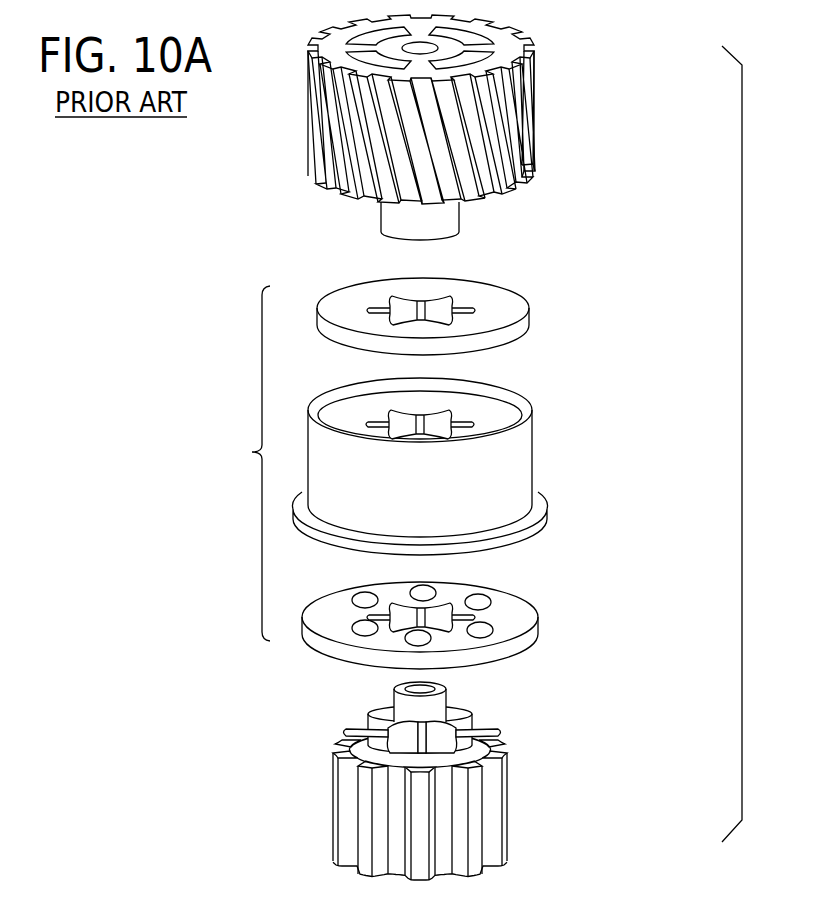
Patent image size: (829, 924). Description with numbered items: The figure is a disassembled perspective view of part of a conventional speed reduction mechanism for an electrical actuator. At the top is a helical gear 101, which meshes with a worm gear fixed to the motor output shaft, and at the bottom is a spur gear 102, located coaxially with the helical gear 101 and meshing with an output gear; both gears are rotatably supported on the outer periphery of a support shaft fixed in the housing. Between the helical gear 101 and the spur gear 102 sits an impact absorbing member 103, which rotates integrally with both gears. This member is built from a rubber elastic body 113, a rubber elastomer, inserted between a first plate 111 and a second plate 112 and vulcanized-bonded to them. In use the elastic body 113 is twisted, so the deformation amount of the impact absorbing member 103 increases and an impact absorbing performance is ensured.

The helical gear 101 is at (545, 50).
The spur gear 102 is at (506, 780).
The impact absorbing member 103 is at (413, 459).
The first plate 111 is at (518, 303).
The second plate 112 is at (518, 610).
The rubber elastic body 113 is at (523, 448).